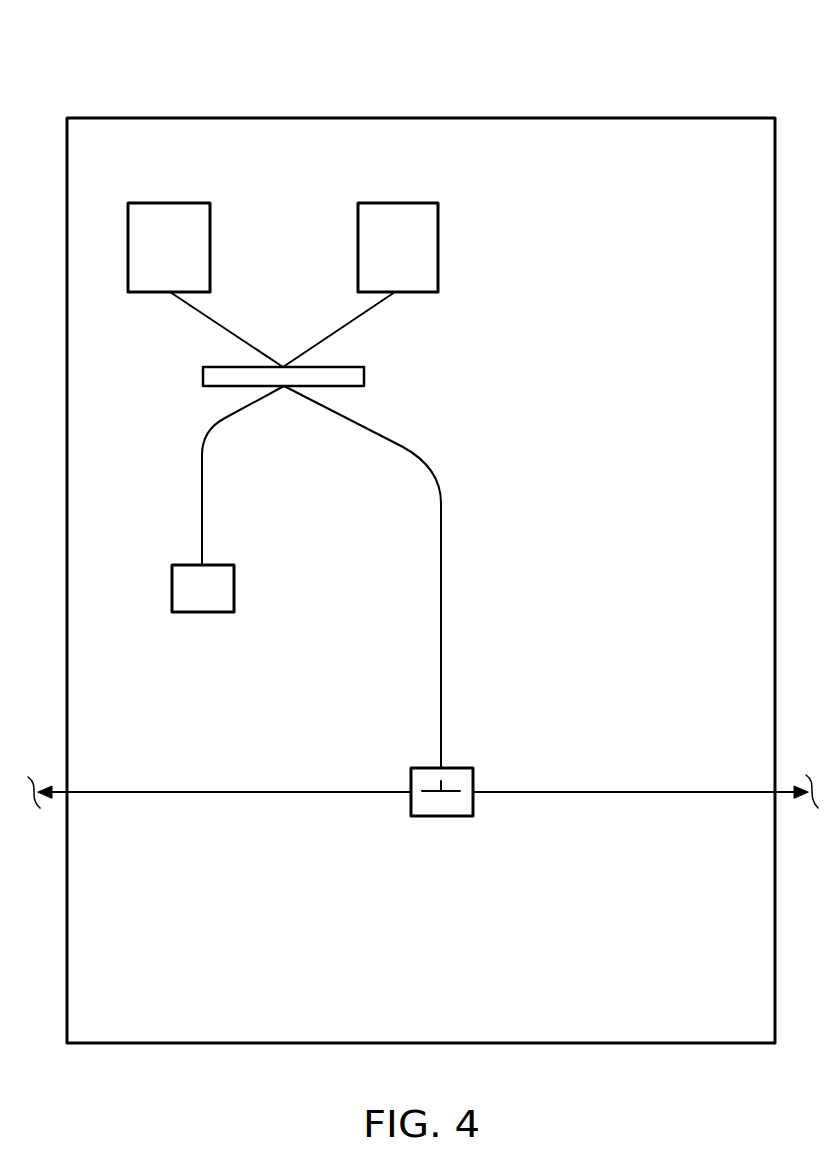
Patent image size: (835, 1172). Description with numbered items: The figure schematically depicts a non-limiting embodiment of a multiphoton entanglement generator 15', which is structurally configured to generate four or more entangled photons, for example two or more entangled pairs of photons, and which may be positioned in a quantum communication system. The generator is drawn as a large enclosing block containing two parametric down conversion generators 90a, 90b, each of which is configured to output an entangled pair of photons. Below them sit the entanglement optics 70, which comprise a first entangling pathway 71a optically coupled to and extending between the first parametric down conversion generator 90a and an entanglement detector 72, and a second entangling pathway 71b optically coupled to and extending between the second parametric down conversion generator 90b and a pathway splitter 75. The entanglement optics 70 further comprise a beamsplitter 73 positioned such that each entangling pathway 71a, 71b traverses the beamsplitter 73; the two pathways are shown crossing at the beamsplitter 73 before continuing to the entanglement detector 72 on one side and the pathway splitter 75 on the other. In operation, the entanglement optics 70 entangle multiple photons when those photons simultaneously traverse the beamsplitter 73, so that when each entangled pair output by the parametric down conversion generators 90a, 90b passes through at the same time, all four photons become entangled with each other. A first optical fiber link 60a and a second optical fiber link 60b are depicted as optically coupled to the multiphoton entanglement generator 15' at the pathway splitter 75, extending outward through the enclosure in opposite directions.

The multiphoton entanglement generator 15' is at (421, 530).
The second parametric down conversion generator 90b is at (168, 203).
The first parametric down conversion generator 90a is at (398, 203).
The first entangling pathway 71a is at (240, 338).
The second entangling pathway 71b is at (335, 332).
The beamsplitter 73 is at (364, 377).
The entanglement optics 70 is at (333, 423).
The entanglement detector 72 is at (202, 612).
The pathway splitter 75 is at (441, 816).
The first optical fiber link 60a is at (272, 792).
The second optical fiber link 60b is at (610, 792).